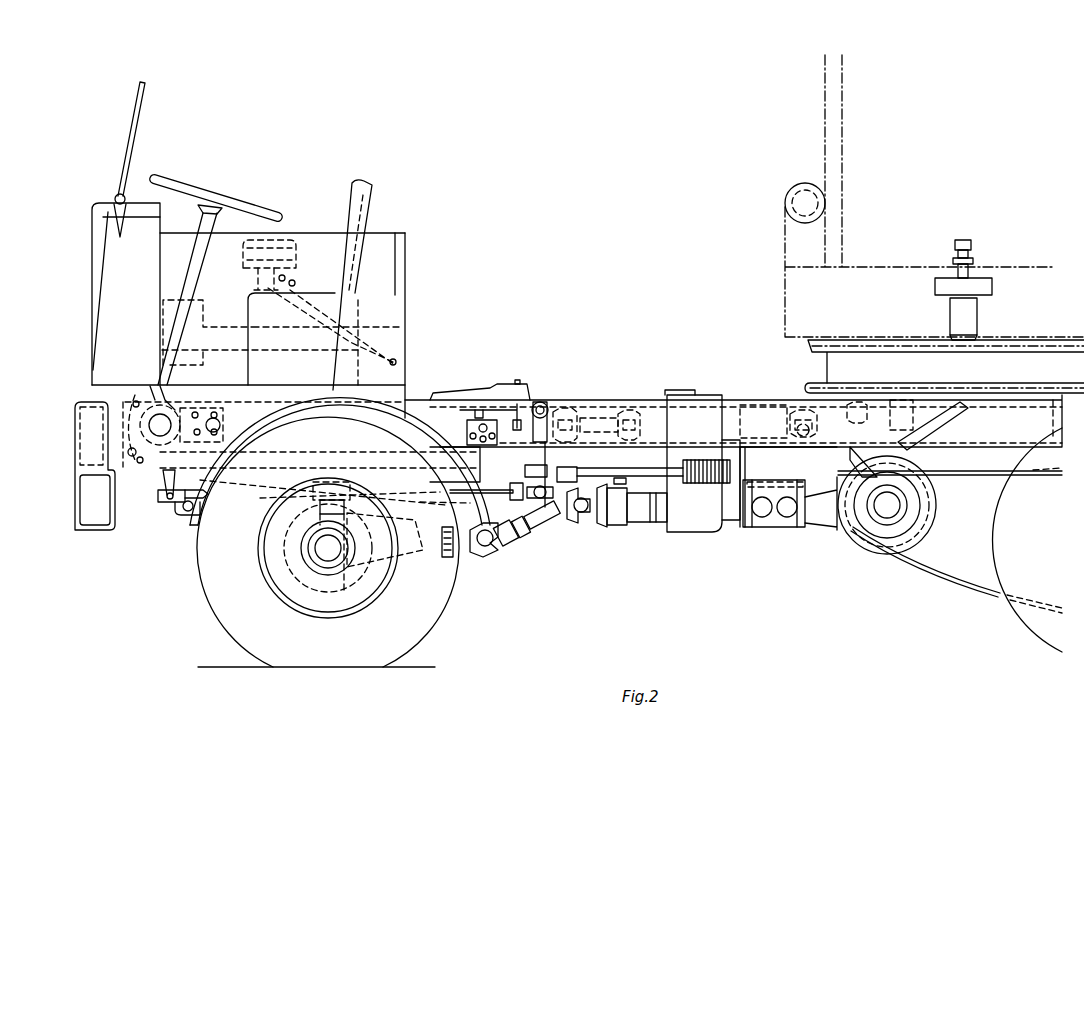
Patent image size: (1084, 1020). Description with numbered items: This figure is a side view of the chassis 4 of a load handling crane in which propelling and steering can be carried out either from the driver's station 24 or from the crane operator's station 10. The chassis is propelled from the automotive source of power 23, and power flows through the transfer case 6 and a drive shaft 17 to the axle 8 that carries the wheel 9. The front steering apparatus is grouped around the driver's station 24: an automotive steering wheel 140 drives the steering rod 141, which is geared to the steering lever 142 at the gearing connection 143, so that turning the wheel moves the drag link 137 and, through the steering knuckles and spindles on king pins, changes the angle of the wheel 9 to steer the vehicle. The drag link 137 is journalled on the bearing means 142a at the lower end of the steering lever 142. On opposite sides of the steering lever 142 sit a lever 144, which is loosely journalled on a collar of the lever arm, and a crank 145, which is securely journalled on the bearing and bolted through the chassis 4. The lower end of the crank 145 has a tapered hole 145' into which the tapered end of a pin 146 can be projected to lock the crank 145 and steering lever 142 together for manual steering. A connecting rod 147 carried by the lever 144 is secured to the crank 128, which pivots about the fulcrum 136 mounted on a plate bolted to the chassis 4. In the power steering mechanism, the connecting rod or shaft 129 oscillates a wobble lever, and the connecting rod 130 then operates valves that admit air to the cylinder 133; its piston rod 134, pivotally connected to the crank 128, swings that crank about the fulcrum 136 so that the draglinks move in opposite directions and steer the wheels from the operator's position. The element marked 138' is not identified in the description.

The automotive steering wheel 140 is at (235, 193).
The steering rod 141 is at (197, 283).
The driver's station 24 is at (408, 243).
The automotive source of power 23 is at (317, 337).
The crane operator's station 10 is at (825, 127).
The connecting rod 130 is at (497, 395).
The fulcrum 136 is at (548, 402).
The crank 145 is at (137, 424).
The tapered hole 145' is at (65, 466).
The gearing connection 143 is at (218, 394).
The chassis 4 is at (140, 476).
The steering lever 142 is at (163, 486).
The bearing means 142a is at (170, 500).
The pin 146 is at (243, 498).
The drag link 137 is at (216, 552).
The lever 144 is at (320, 452).
The connecting rod 147 is at (306, 462).
The axle 8 is at (333, 550).
The wheel 9 is at (437, 607).
The crank 128 is at (546, 458).
The connecting rod or shaft 129 is at (603, 450).
The piston rod 134 is at (622, 482).
The drive shaft section 138' is at (472, 534).
The drive shaft 17 is at (539, 535).
The transfer case 6 is at (688, 525).
The cylinder 133 is at (828, 497).